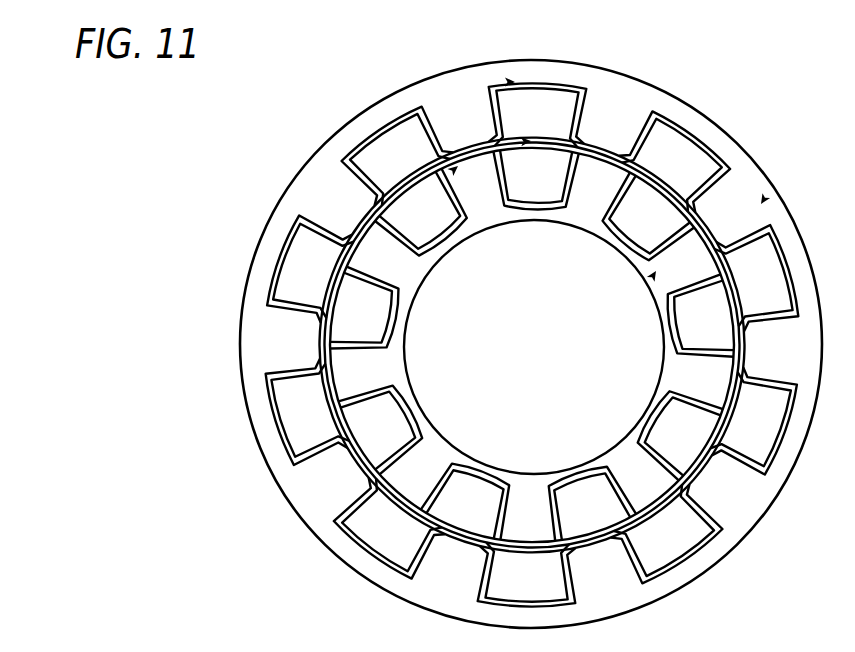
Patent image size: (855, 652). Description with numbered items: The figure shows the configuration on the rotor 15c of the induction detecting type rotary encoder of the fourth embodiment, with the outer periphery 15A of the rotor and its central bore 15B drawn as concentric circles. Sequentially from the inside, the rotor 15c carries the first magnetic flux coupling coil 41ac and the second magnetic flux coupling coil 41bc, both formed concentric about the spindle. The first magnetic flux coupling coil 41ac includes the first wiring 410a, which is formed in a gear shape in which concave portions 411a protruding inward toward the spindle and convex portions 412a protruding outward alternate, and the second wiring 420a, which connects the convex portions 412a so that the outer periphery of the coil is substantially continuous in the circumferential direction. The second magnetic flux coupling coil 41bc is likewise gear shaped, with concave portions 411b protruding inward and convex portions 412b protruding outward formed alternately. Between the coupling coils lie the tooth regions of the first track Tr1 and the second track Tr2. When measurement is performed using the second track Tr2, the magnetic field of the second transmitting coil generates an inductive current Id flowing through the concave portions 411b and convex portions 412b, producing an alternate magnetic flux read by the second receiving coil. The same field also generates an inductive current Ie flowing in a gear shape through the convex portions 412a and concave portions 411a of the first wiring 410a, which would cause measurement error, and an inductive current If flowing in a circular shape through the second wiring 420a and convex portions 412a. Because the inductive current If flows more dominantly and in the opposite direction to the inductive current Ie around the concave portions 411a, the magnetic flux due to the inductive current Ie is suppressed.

The rotor 15c is at (781, 97).
The outer circumference of stator core 15A is at (322, 152).
The inner circumference (bore) of stator core 15B is at (538, 221).
The second magnetic flux coupling coil 41bc is at (108, 180).
The concave portions 411b is at (355, 205).
The convex portions 412b is at (300, 238).
The first magnetic flux coupling coil 41ac is at (103, 345).
The second wiring 420a is at (322, 278).
The first wiring 410a is at (172, 285).
The concave portions 411a is at (308, 318).
The convex portions 412a is at (306, 360).
The inner tooth Tr1 is at (654, 274).
The second track Tr2 is at (763, 201).
The inductive current Id is at (500, 79).
The inductive current Ie is at (418, 80).
The inductive current If is at (466, 138).